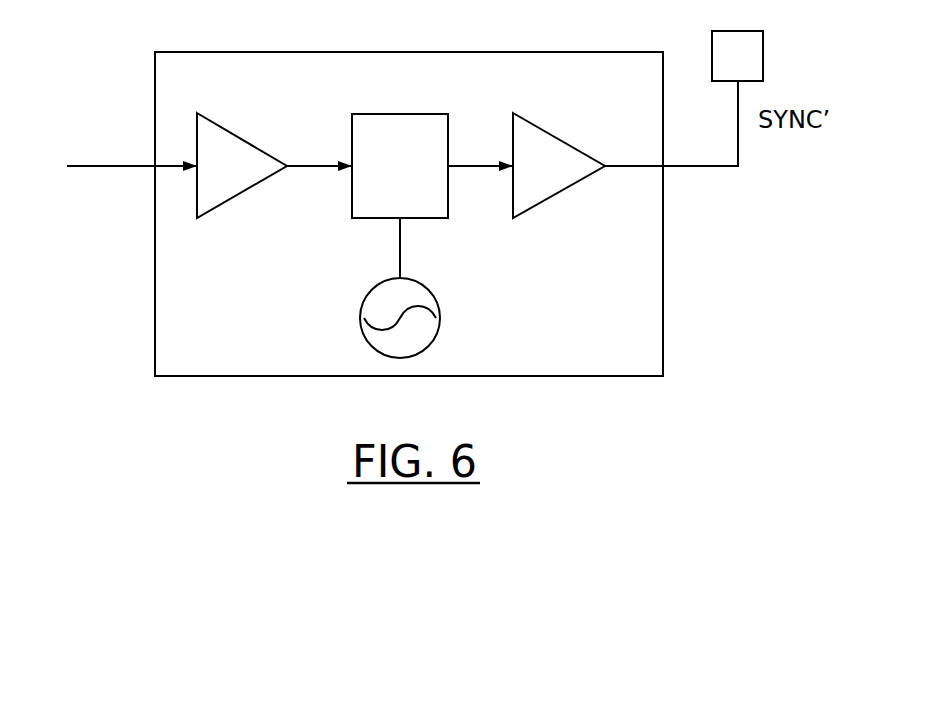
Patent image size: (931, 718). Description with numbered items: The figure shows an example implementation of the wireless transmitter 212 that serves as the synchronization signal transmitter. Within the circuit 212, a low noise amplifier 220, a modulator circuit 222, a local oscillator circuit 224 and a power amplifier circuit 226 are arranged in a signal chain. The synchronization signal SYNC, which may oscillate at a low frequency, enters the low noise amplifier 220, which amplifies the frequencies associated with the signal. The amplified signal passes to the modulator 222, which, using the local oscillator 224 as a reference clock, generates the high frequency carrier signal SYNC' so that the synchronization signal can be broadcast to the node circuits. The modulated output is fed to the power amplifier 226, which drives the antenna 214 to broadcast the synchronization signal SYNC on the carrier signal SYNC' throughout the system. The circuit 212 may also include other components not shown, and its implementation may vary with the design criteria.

The wireless transmitter 212 is at (240, 52).
The antenna 214 is at (730, 31).
The low noise amplifier 220 is at (208, 118).
The modulator circuit 222 is at (395, 114).
The local oscillator circuit 224 is at (382, 282).
The power amplifier circuit 226 is at (525, 118).